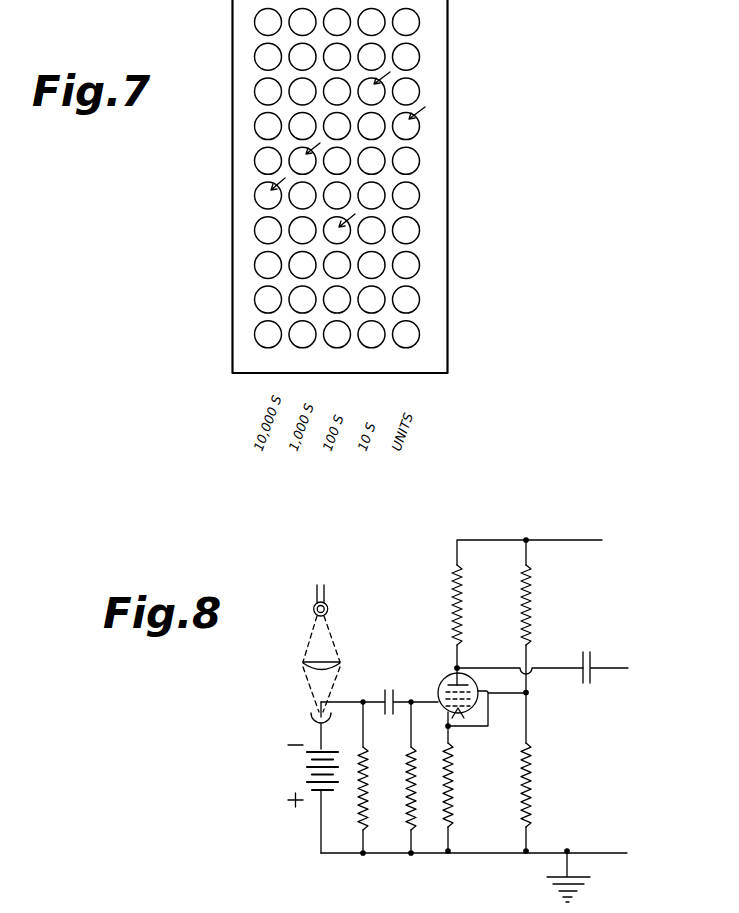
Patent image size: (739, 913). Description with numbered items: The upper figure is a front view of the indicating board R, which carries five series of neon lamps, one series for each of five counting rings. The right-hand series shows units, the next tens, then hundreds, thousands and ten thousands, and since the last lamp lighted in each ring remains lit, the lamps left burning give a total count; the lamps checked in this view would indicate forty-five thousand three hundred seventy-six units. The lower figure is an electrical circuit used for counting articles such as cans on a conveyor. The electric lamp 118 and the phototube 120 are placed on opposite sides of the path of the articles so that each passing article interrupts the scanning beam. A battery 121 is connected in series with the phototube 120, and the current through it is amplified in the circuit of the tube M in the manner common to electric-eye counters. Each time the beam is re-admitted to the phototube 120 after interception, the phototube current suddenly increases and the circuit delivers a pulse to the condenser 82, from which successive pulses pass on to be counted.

In FIG. 7, the indicating board R is at (448, 68).
In FIG. 8, the electric lamp 118 is at (328, 606).
In FIG. 8, the phototube 120 is at (311, 721).
In FIG. 8, the battery 121 is at (307, 768).
In FIG. 8, the condenser 82 is at (590, 662).
In FIG. 8, the tube M is at (446, 680).